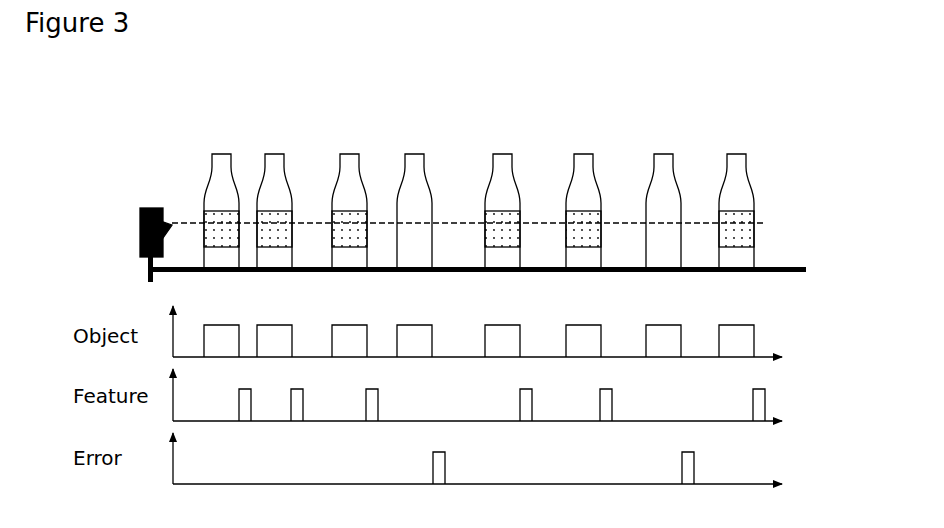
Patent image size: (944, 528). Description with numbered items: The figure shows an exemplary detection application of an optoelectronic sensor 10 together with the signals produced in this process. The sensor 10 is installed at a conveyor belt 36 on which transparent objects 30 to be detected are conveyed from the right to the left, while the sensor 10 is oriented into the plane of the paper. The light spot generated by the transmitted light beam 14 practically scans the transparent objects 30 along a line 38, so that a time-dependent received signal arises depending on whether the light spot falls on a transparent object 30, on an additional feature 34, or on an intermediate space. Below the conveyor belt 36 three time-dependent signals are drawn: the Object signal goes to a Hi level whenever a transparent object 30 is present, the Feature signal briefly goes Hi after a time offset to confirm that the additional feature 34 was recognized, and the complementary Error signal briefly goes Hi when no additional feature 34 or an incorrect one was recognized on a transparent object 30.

The optoelectronic sensor 10 is at (140, 233).
The transmitted light beam 14 is at (163, 228).
The transparent object 30 is at (279, 162).
The additional feature 34 is at (290, 217).
The conveyor belt 36 is at (763, 272).
The line 38 is at (766, 223).